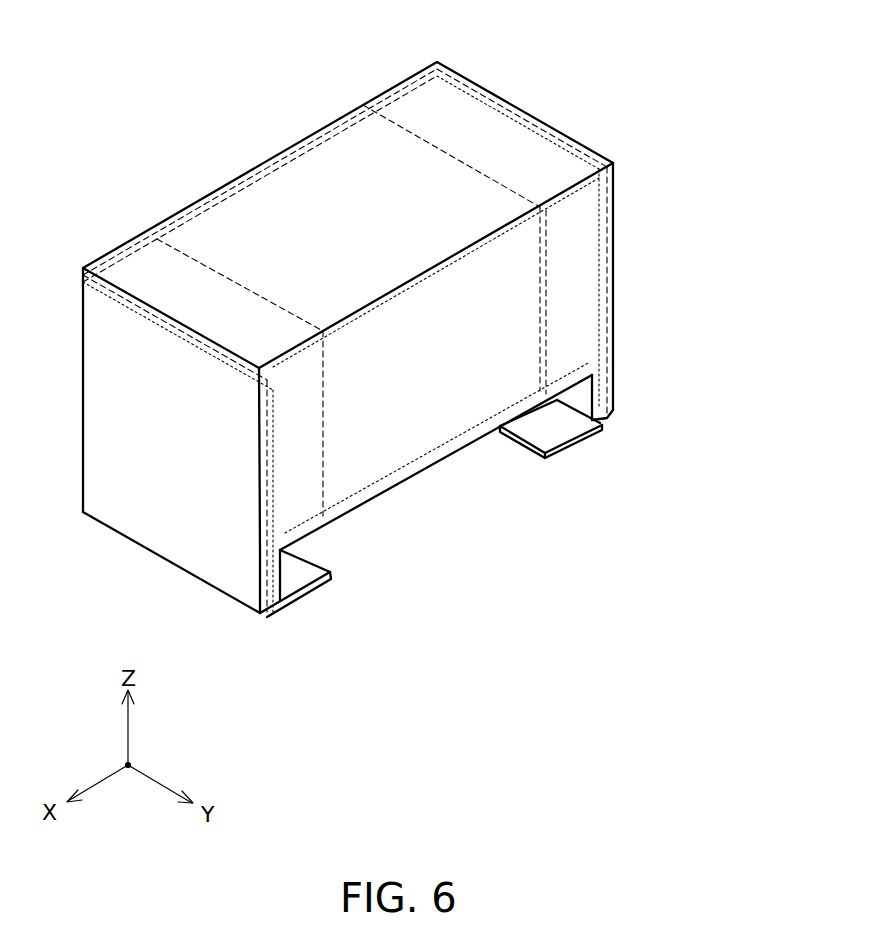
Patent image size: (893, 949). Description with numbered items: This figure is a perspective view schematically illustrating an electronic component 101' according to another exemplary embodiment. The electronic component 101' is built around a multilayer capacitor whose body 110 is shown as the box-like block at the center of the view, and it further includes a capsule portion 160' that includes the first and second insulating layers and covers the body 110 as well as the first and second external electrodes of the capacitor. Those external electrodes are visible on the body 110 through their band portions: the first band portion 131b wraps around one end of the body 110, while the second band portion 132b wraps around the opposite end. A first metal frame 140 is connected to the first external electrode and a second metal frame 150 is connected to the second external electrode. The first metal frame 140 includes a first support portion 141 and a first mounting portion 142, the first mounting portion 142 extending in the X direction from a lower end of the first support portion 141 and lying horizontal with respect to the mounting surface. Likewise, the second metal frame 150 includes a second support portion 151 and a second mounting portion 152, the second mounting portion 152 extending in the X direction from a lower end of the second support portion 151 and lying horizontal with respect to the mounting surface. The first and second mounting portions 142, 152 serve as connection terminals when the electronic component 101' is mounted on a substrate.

The electronic component 101' is at (411, 357).
The body 110 is at (293, 193).
The capsule portion 160' is at (260, 175).
The first band portion 131b is at (300, 477).
The second band portion 132b is at (580, 293).
The first metal frame 140 is at (216, 610).
The first support portion 141 is at (237, 568).
The first mounting portion 142 is at (297, 565).
The second metal frame 150 is at (626, 410).
The second support portion 151 is at (605, 385).
The second mounting portion 152 is at (557, 421).